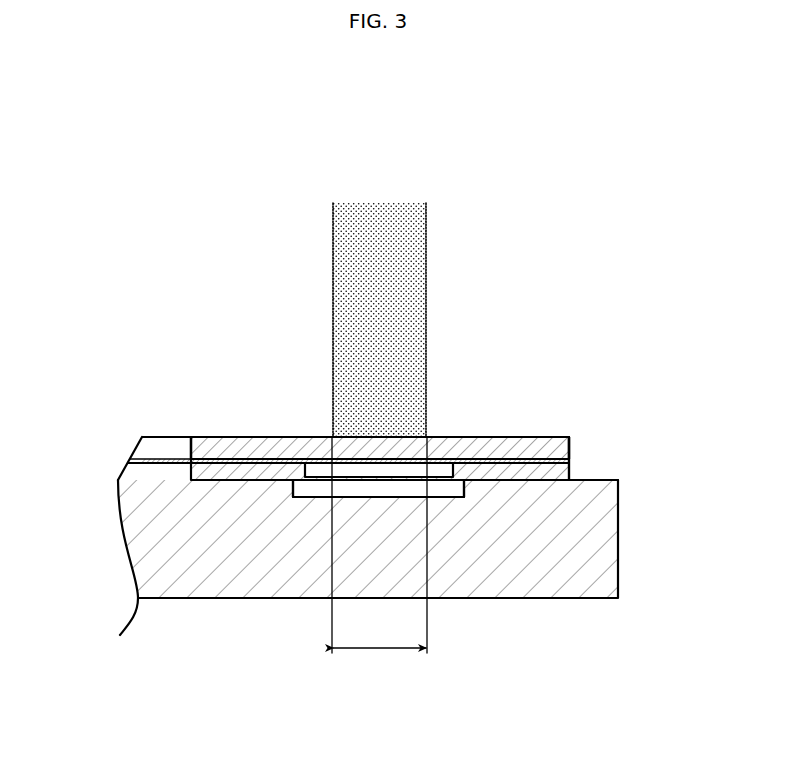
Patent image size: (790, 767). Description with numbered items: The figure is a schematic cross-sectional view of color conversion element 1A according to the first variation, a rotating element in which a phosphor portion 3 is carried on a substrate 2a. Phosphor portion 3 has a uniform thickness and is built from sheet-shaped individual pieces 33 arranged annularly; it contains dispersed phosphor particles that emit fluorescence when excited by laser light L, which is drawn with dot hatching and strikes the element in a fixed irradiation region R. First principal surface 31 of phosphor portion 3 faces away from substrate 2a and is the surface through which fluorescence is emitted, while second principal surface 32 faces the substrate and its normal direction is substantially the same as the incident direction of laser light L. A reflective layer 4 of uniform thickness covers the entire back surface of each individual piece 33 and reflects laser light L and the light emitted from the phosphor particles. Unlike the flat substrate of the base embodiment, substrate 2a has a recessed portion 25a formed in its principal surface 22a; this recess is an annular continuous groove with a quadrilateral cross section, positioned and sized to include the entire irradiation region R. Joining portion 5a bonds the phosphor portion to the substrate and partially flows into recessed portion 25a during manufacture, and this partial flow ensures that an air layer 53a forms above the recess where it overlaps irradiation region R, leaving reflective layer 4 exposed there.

The color conversion element 1A is at (100, 204).
The substrate 2a is at (639, 627).
The principal surface 22a is at (605, 480).
The recessed portion 25a is at (455, 496).
The phosphor portion 3 is at (216, 423).
The individual piece 33 is at (380, 448).
The first principal surface 31 is at (200, 437).
The second principal surface 32 is at (200, 462).
The reflective layer 4 is at (315, 463).
The air layer 53a is at (327, 472).
The joining portion 5a is at (580, 461).
The laser light L is at (344, 258).
The irradiation region R is at (379, 545).